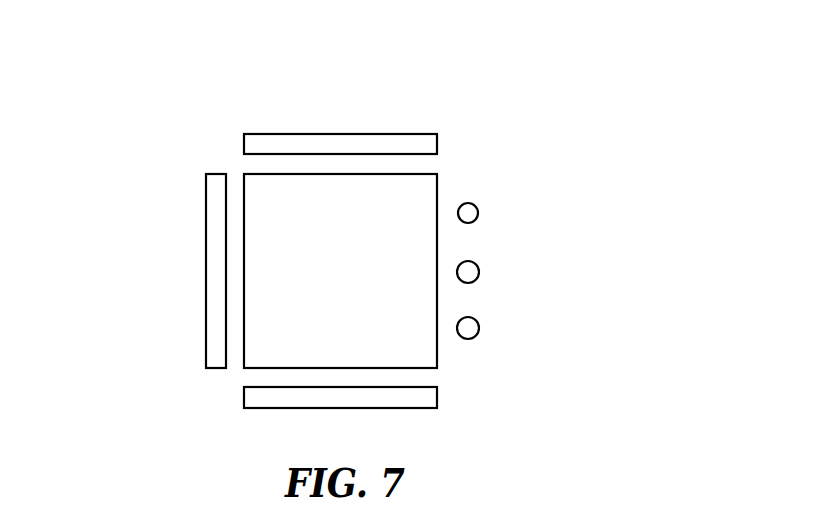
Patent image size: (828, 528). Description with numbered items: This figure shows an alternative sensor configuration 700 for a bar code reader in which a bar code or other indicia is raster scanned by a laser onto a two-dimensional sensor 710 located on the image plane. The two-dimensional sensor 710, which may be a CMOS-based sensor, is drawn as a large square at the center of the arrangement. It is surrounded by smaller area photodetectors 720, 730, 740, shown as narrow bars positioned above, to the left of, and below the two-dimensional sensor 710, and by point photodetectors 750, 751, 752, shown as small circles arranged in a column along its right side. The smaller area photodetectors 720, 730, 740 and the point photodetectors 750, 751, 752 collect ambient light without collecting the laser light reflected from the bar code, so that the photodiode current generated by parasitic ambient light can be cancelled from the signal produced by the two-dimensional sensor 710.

The alternative sensor configuration 700 is at (200, 59).
The two-dimensional sensor 710 is at (418, 205).
The smaller area photodetector 720 is at (347, 145).
The smaller area photodetector 730 is at (215, 212).
The smaller area photodetector 740 is at (257, 397).
The point photodetector 750 is at (473, 206).
The point photodetector 751 is at (473, 266).
The point photodetector 752 is at (473, 322).